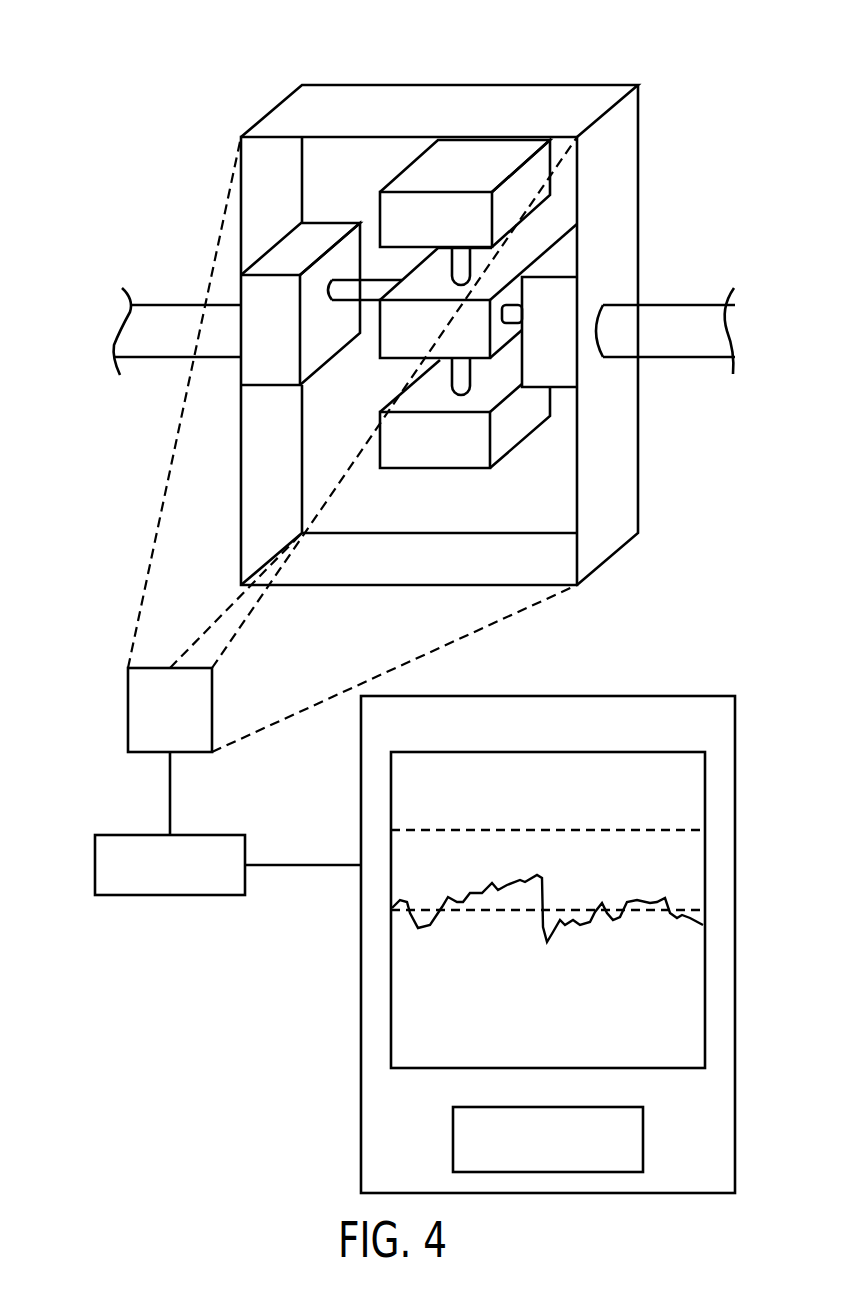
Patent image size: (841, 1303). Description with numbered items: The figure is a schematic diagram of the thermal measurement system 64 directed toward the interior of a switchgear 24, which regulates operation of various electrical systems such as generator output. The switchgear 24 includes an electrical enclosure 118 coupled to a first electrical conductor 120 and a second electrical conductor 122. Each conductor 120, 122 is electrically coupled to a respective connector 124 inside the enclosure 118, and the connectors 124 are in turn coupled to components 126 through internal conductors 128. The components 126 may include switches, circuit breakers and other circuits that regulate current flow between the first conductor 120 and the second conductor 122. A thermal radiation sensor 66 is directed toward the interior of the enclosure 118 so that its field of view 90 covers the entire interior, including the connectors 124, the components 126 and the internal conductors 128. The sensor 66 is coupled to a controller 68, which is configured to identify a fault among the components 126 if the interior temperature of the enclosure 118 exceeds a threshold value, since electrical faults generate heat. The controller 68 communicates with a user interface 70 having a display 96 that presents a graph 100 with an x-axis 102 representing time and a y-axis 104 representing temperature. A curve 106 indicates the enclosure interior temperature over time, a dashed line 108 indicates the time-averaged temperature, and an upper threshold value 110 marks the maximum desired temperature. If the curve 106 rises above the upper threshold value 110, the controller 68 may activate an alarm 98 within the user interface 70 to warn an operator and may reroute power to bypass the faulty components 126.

The switchgear 24 is at (434, 30).
The electrical enclosure 118 is at (553, 98).
The first electrical conductor 120 is at (165, 305).
The second electrical conductor 122 is at (695, 304).
The connector 124 is at (288, 250).
The components 126 is at (428, 173).
The internal conductors 128 is at (462, 254).
The field of view 90 is at (157, 534).
The thermal radiation sensor 66 is at (128, 710).
The thermal measurement system 64 is at (68, 850).
The controller 68 is at (168, 897).
The user interface 70 is at (547, 696).
The display 96 is at (680, 752).
The alarm 98 is at (645, 1142).
The graph 100 is at (428, 1010).
The x-axis 102 is at (625, 1068).
The y-axis 104 is at (393, 780).
The curve 106 is at (553, 868).
The dashed line 108 is at (705, 925).
The upper threshold value 110 is at (547, 830).